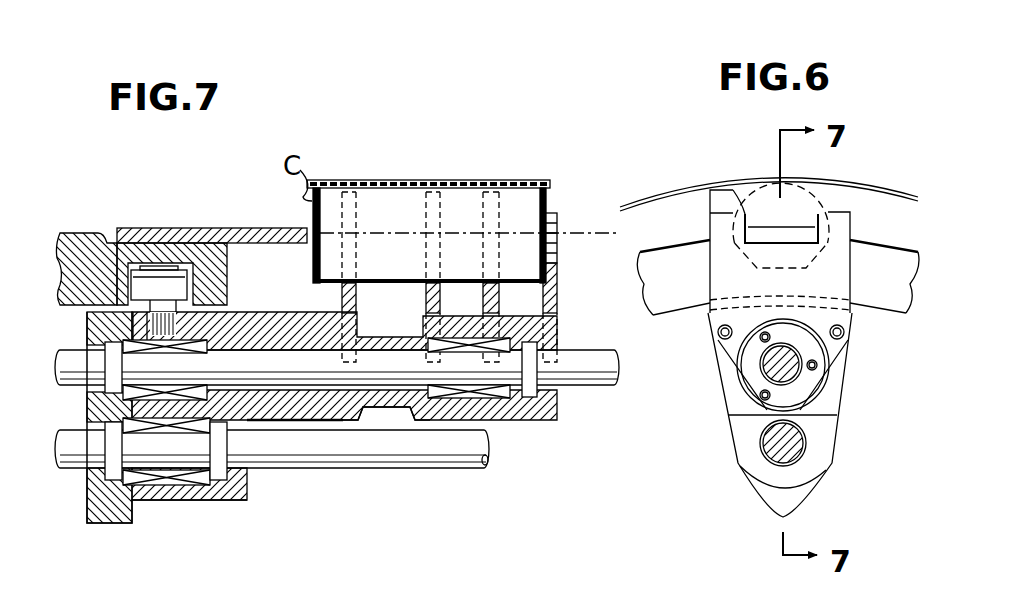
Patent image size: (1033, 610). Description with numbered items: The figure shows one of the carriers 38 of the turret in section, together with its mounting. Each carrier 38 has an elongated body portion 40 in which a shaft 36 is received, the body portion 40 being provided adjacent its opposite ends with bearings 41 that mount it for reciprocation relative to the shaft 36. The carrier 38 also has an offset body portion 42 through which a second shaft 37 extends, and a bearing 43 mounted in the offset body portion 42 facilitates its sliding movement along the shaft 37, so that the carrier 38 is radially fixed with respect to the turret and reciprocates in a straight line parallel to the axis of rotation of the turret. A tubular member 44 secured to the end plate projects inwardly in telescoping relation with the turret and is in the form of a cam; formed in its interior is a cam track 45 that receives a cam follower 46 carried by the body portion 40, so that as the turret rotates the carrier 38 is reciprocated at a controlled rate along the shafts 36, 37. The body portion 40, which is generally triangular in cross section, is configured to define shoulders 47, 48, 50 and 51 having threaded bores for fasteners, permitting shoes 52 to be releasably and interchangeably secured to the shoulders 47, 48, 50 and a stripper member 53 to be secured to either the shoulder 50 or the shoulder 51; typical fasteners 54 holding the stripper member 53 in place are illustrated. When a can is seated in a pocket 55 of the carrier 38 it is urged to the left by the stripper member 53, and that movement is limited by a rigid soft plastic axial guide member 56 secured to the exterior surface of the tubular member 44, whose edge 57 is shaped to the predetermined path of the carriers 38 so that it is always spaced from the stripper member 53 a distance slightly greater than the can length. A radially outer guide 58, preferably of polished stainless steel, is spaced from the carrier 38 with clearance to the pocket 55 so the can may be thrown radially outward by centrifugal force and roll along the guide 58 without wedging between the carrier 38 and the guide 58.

In FIG. 7, the shaft 36 is at (592, 370).
In FIG. 6, the shaft 36 is at (767, 372).
In FIG. 7, the shaft 37 is at (478, 466).
In FIG. 6, the shaft 37 is at (767, 457).
In FIG. 7, the carrier 38 is at (251, 503).
In FIG. 6, the carrier 38 is at (851, 392).
In FIG. 7, the elongated body portion 40 is at (275, 312).
In FIG. 7, the bearings 41 is at (197, 327).
In FIG. 7, the offset body portion 42 is at (220, 500).
In FIG. 7, the bearing 43 is at (160, 488).
In FIG. 7, the tubular member 44 is at (88, 240).
In FIG. 6, the tubular member 44 is at (877, 292).
In FIG. 7, the cam track 45 is at (140, 228).
In FIG. 7, the cam follower 46 is at (207, 242).
In FIG. 7, the shoulder 47 is at (355, 421).
In FIG. 7, the shoulder 48 is at (440, 421).
In FIG. 7, the shoulder 50 is at (498, 309).
In FIG. 7, the shoulder 51 is at (557, 305).
In FIG. 7, the shoes 52 is at (500, 200).
In FIG. 7, the stripper member 53 is at (557, 270).
In FIG. 6, the stripper member 53 is at (718, 280).
In FIG. 6, the fasteners 54 is at (717, 341).
In FIG. 7, the pocket 55 is at (487, 276).
In FIG. 7, the axial guide member 56 is at (190, 228).
In FIG. 7, the edge 57 is at (300, 256).
In FIG. 7, the radially outer guide 58 is at (420, 176).
In FIG. 6, the radially outer guide 58 is at (730, 177).